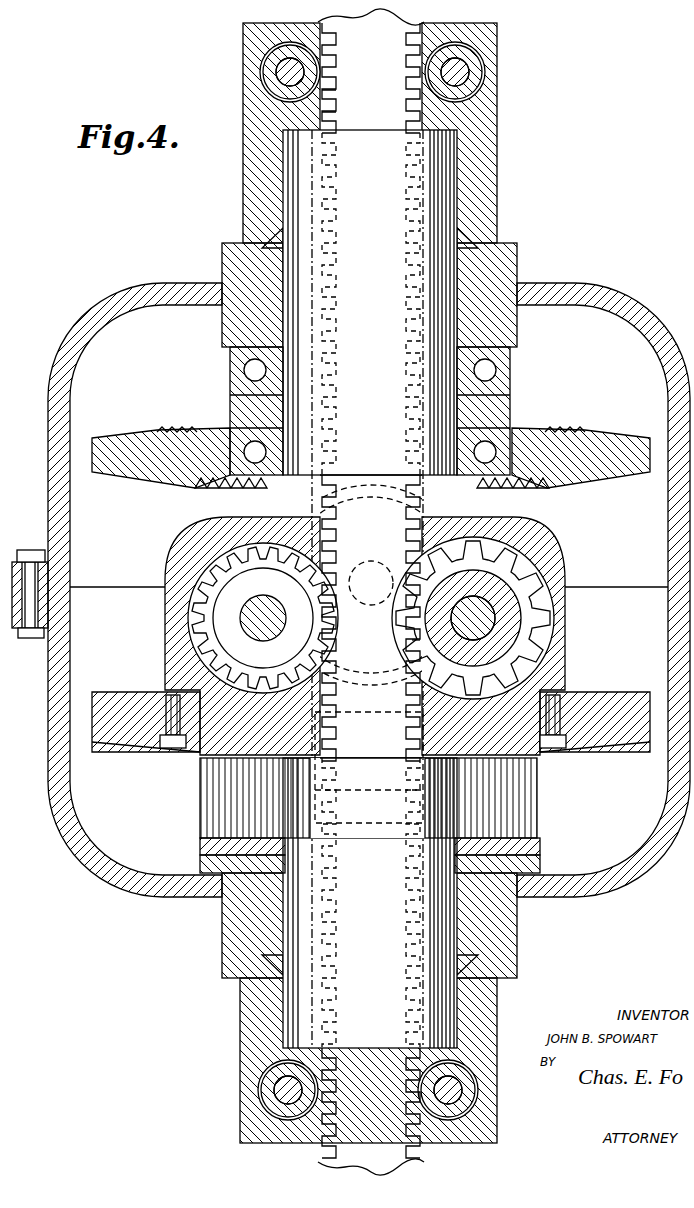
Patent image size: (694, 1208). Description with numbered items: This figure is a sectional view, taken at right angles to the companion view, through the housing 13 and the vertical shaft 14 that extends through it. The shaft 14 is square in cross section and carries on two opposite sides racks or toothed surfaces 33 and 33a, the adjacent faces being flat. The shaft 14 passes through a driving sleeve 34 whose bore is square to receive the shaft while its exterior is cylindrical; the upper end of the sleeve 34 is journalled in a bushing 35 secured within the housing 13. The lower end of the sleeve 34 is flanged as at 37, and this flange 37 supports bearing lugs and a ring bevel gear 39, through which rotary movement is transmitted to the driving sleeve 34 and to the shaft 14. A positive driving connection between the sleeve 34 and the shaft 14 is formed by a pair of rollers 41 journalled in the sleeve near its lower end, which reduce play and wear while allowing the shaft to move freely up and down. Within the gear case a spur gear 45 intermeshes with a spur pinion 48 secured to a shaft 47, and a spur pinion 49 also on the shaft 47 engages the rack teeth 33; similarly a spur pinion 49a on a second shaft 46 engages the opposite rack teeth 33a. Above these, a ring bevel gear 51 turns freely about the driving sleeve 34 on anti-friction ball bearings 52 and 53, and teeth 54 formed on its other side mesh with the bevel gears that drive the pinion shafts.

The housing 13 is at (596, 308).
The shaft 14 is at (371, 592).
The rack teeth 33 is at (420, 79).
The rack teeth 33a is at (326, 97).
The driving sleeve 34 is at (447, 199).
The bushing 35 is at (462, 253).
The flange 37 is at (636, 693).
The ring bevel gear 39 is at (598, 741).
The rollers 41 is at (344, 709).
The spur gear 45 is at (371, 585).
The shaft 46 is at (270, 636).
The shaft 47 is at (480, 619).
The spur pinion 48 is at (251, 636).
The spur pinion 49 is at (515, 652).
The spur pinion 49a is at (396, 640).
The bevel gear 51 is at (133, 436).
The ball bearings 52 is at (497, 362).
The ball bearings 53 is at (510, 450).
The teeth 54 is at (185, 481).